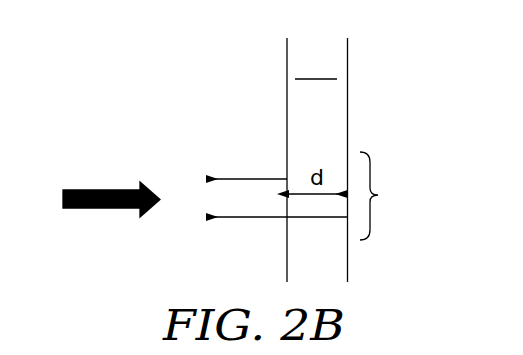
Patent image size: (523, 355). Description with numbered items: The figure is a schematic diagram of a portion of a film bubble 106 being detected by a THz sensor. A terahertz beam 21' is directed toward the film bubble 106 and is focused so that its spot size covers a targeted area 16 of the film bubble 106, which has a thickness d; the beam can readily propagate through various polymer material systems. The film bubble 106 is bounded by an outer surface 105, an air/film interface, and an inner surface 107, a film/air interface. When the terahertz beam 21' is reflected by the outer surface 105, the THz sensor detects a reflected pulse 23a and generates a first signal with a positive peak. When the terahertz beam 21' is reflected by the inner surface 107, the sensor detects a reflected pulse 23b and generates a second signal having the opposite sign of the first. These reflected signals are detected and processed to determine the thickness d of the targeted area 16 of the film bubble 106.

The outer surface 105 is at (287, 68).
The film bubble 106 is at (316, 66).
The inner surface 107 is at (348, 68).
The targeted area 16 is at (385, 196).
The terahertz beam 21' is at (111, 191).
The reflected pulse 23a is at (235, 163).
The reflected pulse 23b is at (263, 237).